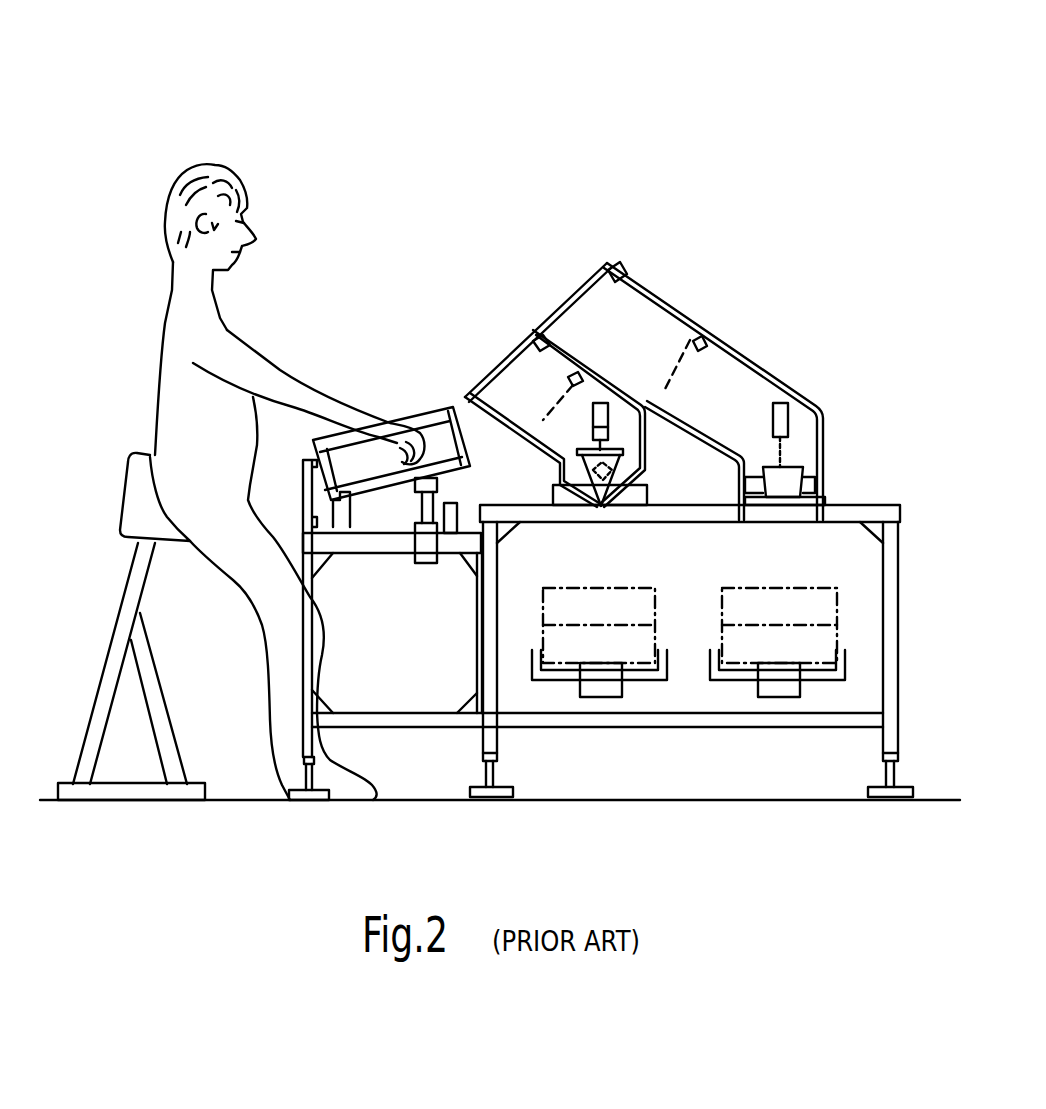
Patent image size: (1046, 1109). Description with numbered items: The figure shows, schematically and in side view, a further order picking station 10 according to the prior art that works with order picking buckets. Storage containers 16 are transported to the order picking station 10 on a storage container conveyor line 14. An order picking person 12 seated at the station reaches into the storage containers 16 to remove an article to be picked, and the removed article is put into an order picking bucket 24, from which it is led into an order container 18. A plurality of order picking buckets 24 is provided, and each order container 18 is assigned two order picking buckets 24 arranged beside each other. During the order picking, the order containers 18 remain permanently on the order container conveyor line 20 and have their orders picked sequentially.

The order picking station 10 is at (430, 195).
The order picking person 12 is at (183, 330).
The storage container conveyor line 14 is at (348, 500).
The storage container 16 is at (320, 447).
The order container 18 is at (645, 611).
The order container conveyor line 20 is at (600, 683).
The order picking bucket 24 is at (520, 373).